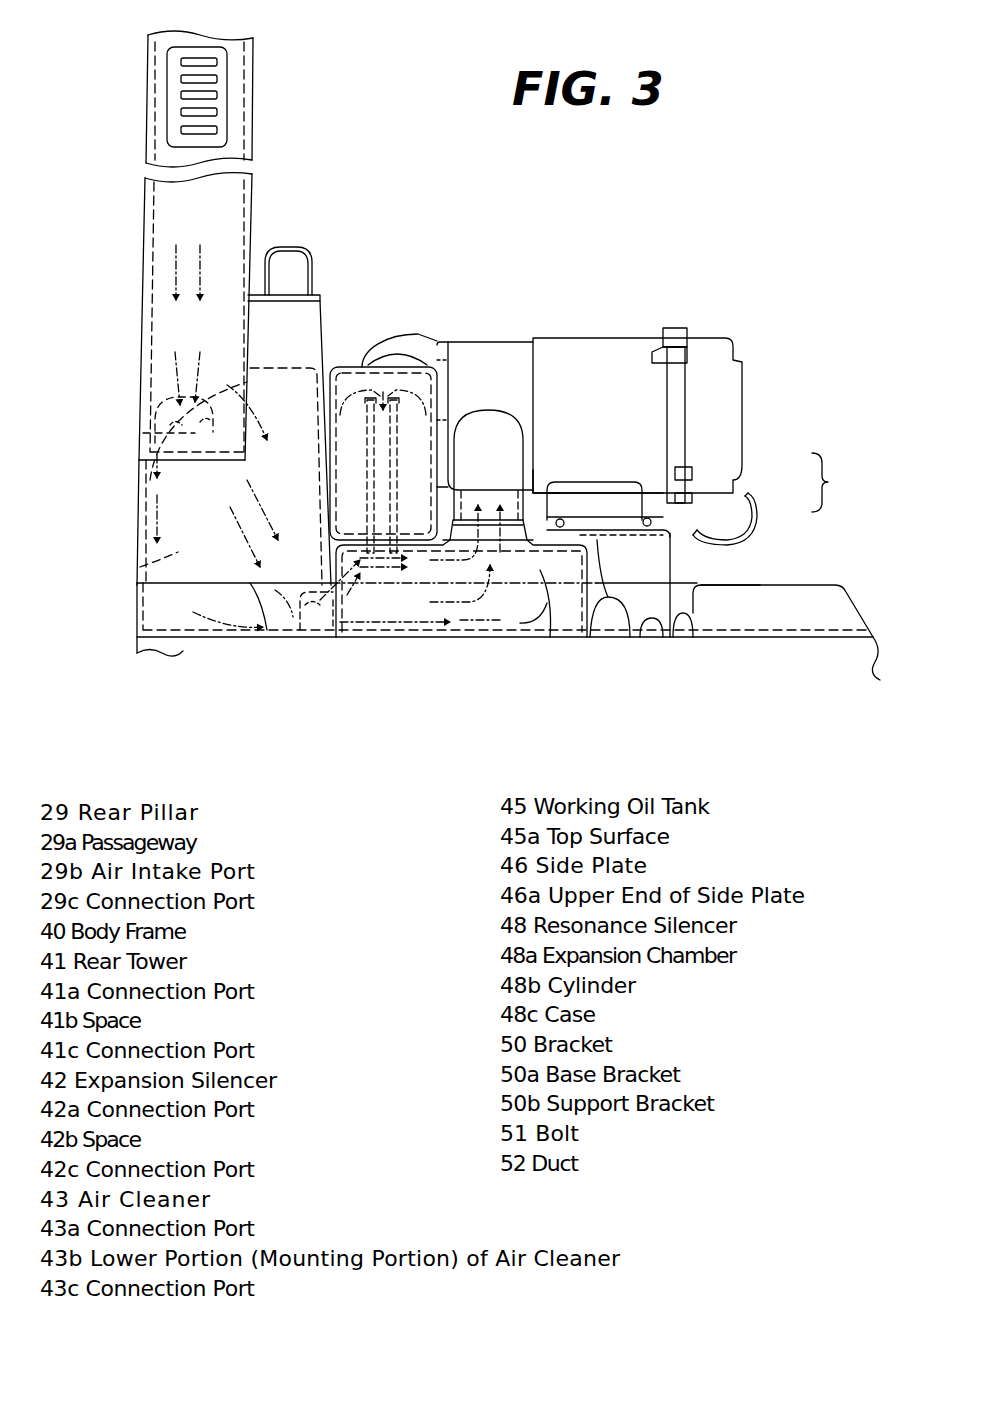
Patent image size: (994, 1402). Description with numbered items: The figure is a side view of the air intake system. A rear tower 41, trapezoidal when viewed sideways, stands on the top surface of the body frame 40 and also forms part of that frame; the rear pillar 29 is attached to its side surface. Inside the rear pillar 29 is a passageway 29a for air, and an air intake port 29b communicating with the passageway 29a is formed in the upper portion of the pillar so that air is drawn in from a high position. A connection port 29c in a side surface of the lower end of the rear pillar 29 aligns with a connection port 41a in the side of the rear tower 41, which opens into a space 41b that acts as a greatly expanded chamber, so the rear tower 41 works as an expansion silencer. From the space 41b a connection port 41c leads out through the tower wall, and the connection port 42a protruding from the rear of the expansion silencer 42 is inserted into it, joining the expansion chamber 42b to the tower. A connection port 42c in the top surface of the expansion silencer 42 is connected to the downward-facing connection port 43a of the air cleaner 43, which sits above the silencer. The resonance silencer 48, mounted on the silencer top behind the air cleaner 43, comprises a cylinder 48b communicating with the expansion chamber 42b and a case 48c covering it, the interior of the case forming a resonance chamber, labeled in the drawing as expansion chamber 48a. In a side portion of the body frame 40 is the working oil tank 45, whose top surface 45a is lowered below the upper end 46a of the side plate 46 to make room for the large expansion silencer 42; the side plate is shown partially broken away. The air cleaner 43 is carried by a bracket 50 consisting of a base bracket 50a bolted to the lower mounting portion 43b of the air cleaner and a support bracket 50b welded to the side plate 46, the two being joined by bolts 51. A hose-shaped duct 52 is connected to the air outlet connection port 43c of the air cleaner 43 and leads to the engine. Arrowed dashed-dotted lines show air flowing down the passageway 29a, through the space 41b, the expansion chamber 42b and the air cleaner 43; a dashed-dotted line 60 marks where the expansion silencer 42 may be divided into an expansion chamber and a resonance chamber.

The rear pillar 29 is at (143, 197).
The passageway 29a is at (183, 222).
The air intake port 29b is at (215, 95).
The connection port 29c is at (143, 433).
The body frame 40 is at (134, 628).
The rear tower 41 is at (138, 528).
The connection port 41a is at (150, 480).
The space 41b is at (140, 565).
The connection port 41c is at (370, 640).
The expansion silencer 42 is at (605, 600).
The connection port 42a is at (300, 628).
The expansion chamber 42b is at (485, 607).
The connection port 42c is at (497, 553).
The air cleaner 43 is at (630, 353).
The connection port 43a is at (533, 487).
The lower portion (mounting portion) of air cleaner 43b is at (600, 497).
The connection port 43c is at (437, 345).
The working oil tank 45 is at (690, 617).
The top surface 45a is at (662, 630).
The side plate 46 is at (808, 600).
The upper end of side plate 46a is at (745, 585).
The resonance silencer 48 is at (417, 342).
The Expansion Chamber 48a is at (410, 437).
The cylinder 48b is at (440, 415).
The case 48c is at (437, 447).
The bracket 50 is at (839, 482).
The base bracket 50a is at (640, 515).
The support bracket 50b is at (727, 537).
The bolts 51 is at (648, 520).
The duct 52 is at (383, 350).
The dashed-dotted line 60 is at (550, 637).